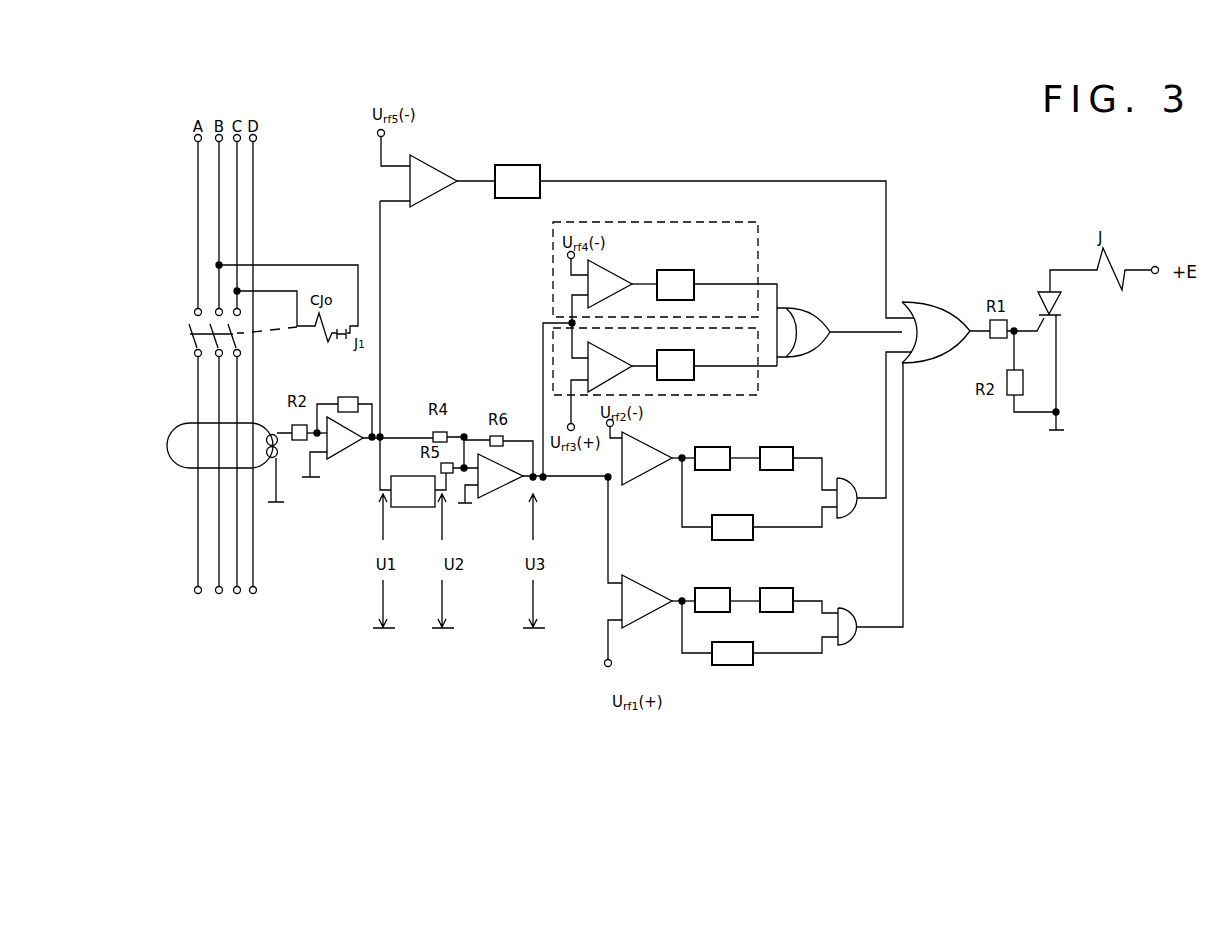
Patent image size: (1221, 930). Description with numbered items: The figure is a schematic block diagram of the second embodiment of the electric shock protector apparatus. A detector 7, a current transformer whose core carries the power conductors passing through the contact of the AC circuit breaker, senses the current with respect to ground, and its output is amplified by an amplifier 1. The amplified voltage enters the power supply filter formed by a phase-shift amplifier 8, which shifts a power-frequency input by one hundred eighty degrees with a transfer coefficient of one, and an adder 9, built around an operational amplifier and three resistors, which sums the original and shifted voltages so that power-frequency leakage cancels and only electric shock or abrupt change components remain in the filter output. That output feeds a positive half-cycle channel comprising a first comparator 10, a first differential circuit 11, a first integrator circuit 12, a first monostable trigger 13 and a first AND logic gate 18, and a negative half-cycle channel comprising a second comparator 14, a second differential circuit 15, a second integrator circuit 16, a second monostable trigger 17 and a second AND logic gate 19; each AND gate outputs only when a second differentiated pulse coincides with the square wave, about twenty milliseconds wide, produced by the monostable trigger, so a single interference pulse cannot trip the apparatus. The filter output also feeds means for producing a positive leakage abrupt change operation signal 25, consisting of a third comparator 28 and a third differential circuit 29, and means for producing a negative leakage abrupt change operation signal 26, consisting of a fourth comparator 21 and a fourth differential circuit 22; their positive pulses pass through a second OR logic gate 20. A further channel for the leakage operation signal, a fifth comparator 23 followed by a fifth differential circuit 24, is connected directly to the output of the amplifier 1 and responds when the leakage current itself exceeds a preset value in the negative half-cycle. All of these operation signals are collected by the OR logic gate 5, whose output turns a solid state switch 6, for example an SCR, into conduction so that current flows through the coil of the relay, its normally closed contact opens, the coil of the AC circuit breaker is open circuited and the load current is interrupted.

The amplifier 1 is at (347, 460).
The OR logic gate 5 is at (930, 308).
The solid state switch 6 is at (1058, 297).
The detector 7 is at (217, 447).
The phase-shift amplifier 8 is at (412, 507).
The adder 9 is at (488, 490).
The first comparator 10 is at (647, 592).
The first differential circuit 11 is at (747, 660).
The first integrator circuit 12 is at (718, 592).
The first monostable trigger 13 is at (790, 592).
The second comparator 14 is at (650, 475).
The second differential circuit 15 is at (759, 499).
The second integrator circuit 16 is at (707, 447).
The second monostable trigger 17 is at (793, 447).
The first AND logic gate 18 is at (850, 635).
The second AND logic gate 19 is at (853, 505).
The second OR logic gate 20 is at (807, 307).
The fourth comparator 21 is at (617, 280).
The fourth differential circuit 22 is at (693, 272).
The fifth comparator 23 is at (437, 168).
The fifth differential circuit 24 is at (538, 166).
The means for producing positive leakage abrupt change operation signal 25 is at (768, 393).
The means for producing negative leakage abrupt change operation signal 26 is at (760, 232).
The third comparator 28 is at (618, 362).
The third differential circuit 29 is at (692, 356).